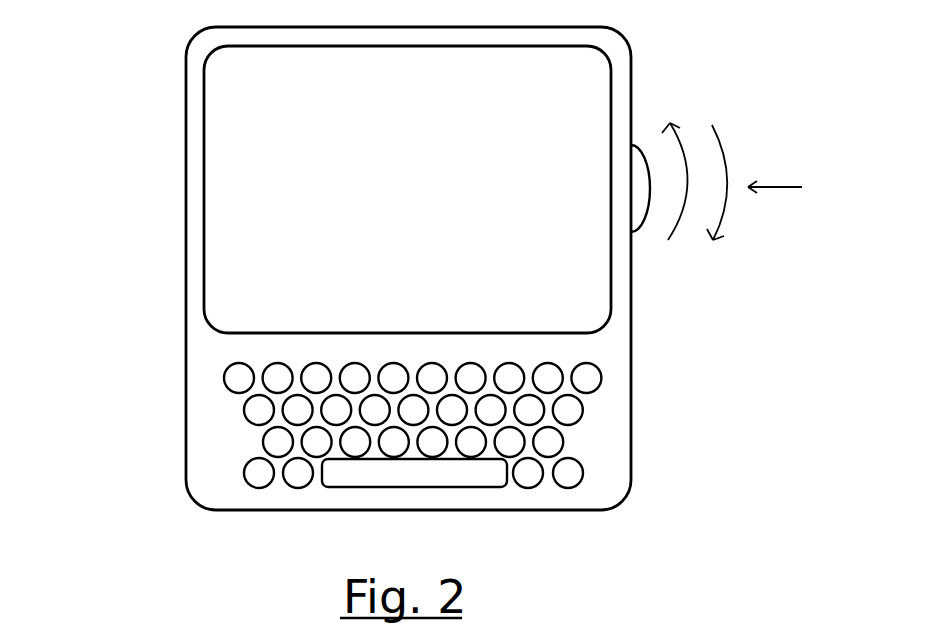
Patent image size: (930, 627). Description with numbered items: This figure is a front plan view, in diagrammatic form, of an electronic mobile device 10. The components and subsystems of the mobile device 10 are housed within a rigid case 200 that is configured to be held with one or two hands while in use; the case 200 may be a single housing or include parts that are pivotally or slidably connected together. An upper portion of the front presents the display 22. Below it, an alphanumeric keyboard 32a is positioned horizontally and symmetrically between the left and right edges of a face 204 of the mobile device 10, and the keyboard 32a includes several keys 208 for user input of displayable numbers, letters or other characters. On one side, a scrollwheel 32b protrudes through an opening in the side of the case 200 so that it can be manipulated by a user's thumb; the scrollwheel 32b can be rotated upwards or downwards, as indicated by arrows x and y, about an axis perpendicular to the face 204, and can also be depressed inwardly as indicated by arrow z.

The electronic mobile device 10 is at (183, 18).
The rigid case 200 is at (186, 168).
The display 22 is at (273, 288).
The face 204 is at (200, 393).
The keys 208 is at (279, 372).
The alphanumeric keyboard 32a is at (590, 447).
The scrollwheel 32b is at (632, 227).